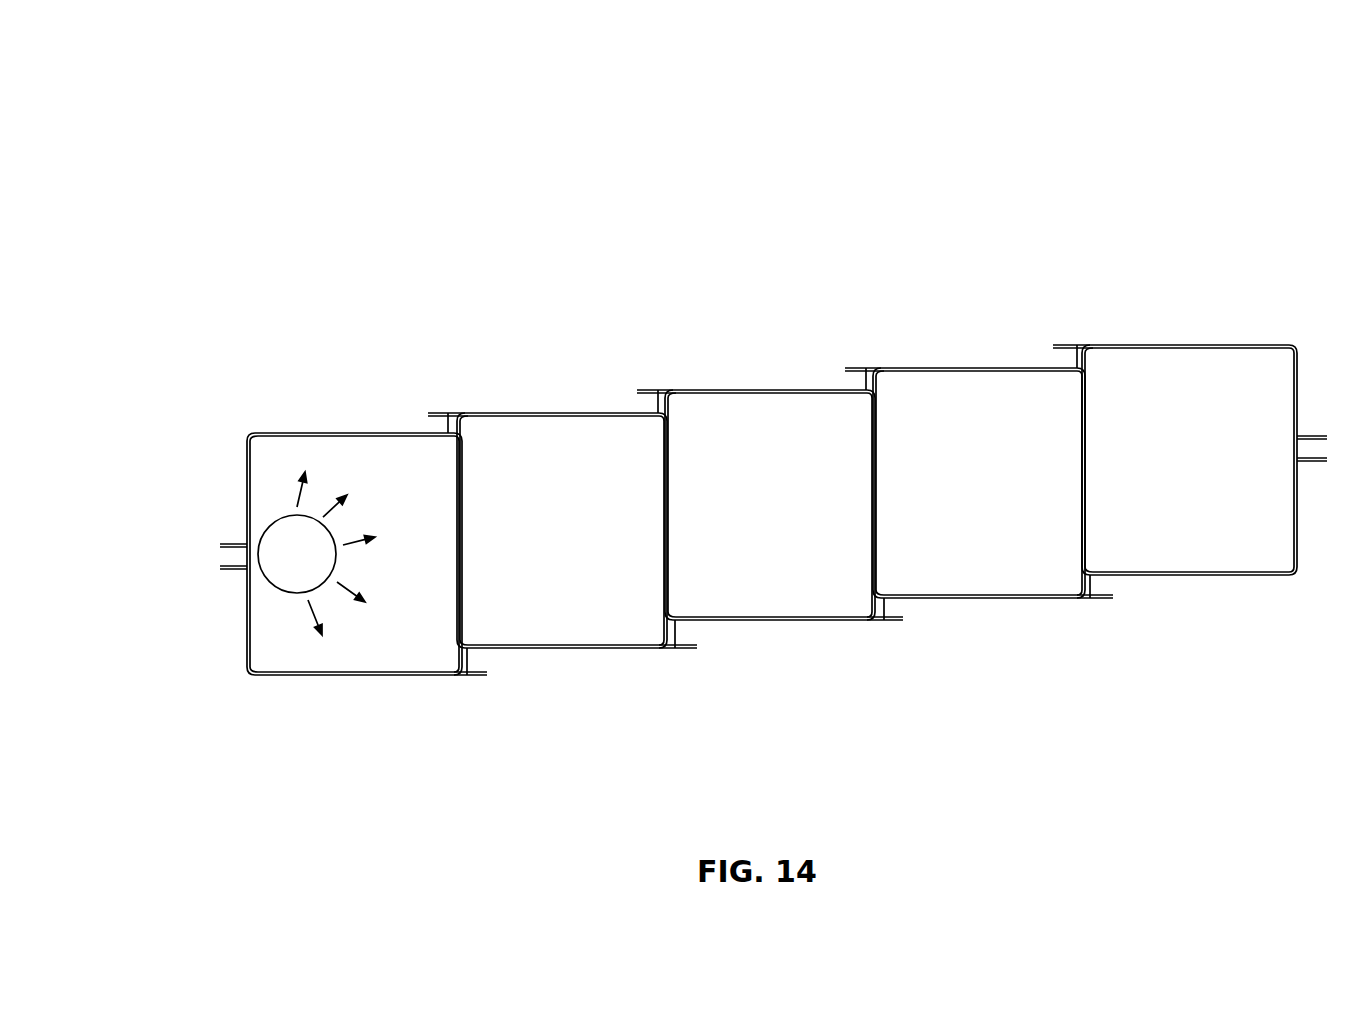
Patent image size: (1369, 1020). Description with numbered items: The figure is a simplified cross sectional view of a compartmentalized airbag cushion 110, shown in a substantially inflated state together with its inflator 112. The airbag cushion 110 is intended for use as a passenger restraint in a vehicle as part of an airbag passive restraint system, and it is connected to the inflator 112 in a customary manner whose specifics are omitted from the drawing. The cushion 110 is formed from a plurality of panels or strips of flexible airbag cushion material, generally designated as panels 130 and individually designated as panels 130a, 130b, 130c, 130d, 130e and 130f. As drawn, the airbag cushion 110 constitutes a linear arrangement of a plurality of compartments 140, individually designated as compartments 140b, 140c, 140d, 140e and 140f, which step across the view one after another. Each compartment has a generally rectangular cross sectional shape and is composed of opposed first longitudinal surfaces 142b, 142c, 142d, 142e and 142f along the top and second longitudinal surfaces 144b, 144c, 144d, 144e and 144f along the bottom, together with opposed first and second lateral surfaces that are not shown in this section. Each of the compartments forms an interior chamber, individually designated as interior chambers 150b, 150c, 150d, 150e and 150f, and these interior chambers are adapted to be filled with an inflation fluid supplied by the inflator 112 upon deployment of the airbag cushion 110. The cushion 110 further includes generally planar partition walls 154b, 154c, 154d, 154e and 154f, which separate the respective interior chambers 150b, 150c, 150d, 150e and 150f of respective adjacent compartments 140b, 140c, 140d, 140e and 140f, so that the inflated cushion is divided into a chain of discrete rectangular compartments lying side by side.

The airbag cushion 110 is at (740, 177).
The inflator 112 is at (275, 593).
The panels 130 is at (1092, 330).
The panel 130a is at (247, 633).
The panel 130b is at (268, 433).
The panel 130c is at (490, 410).
The panel 130d is at (703, 387).
The panel 130e is at (930, 365).
The panel 130f is at (1162, 340).
The compartments 140 is at (442, 678).
The compartment 140b is at (382, 433).
The compartment 140c is at (605, 410).
The compartment 140d is at (818, 387).
The compartment 140e is at (1043, 365).
The compartment 140f is at (1278, 340).
The first longitudinal surface 142b is at (335, 433).
The first longitudinal surface 142c is at (555, 410).
The first longitudinal surface 142d is at (768, 387).
The first longitudinal surface 142e is at (995, 365).
The first longitudinal surface 142f is at (1230, 340).
The second longitudinal surface 144b is at (375, 678).
The second longitudinal surface 144c is at (575, 652).
The second longitudinal surface 144d is at (785, 623).
The second longitudinal surface 144e is at (1007, 600).
The second longitudinal surface 144f is at (1213, 577).
The interior chamber 150b is at (432, 488).
The interior chamber 150c is at (583, 534).
The interior chamber 150d is at (792, 506).
The interior chamber 150e is at (1012, 483).
The interior chamber 150f is at (1210, 458).
The partition wall 154b is at (453, 533).
The partition wall 154c is at (660, 508).
The partition wall 154d is at (870, 482).
The partition wall 154e is at (1080, 453).
The partition wall 154f is at (1290, 407).